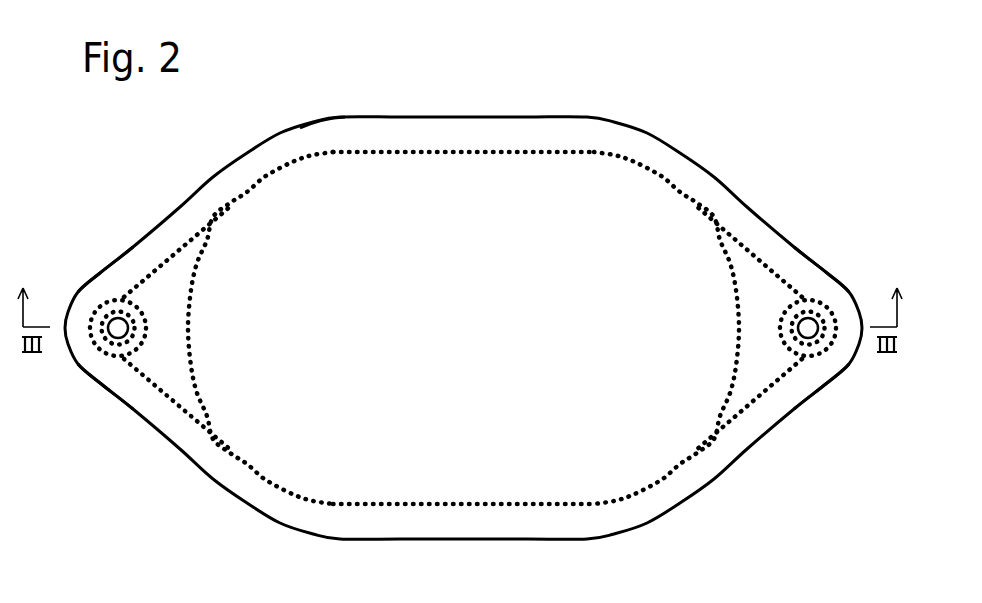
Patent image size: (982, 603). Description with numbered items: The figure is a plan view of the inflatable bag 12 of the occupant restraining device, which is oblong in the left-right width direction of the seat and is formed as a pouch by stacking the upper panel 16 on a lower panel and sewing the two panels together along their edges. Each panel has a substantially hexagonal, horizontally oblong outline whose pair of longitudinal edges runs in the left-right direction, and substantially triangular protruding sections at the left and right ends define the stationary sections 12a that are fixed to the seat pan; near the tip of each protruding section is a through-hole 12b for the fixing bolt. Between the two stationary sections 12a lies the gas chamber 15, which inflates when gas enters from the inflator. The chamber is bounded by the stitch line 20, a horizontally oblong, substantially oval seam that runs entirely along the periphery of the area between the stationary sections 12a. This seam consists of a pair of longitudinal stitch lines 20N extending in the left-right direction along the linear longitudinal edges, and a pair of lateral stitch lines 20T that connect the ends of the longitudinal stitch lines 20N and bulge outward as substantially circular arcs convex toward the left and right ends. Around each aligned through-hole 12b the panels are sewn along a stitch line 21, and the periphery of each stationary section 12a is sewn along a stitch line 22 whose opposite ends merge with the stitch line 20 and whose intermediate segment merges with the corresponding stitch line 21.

The bag 12 is at (658, 109).
The stationary section 12a is at (77, 294).
The through-hole 12b is at (83, 344).
The gas chamber 15 is at (402, 363).
The upper panel 16 is at (320, 134).
The stitch line 20 is at (463, 328).
The longitudinal stitch line 20N is at (458, 153).
The lateral stitch line 20T is at (192, 332).
The stitch line 21 is at (142, 314).
The stitch line 22 is at (172, 253).